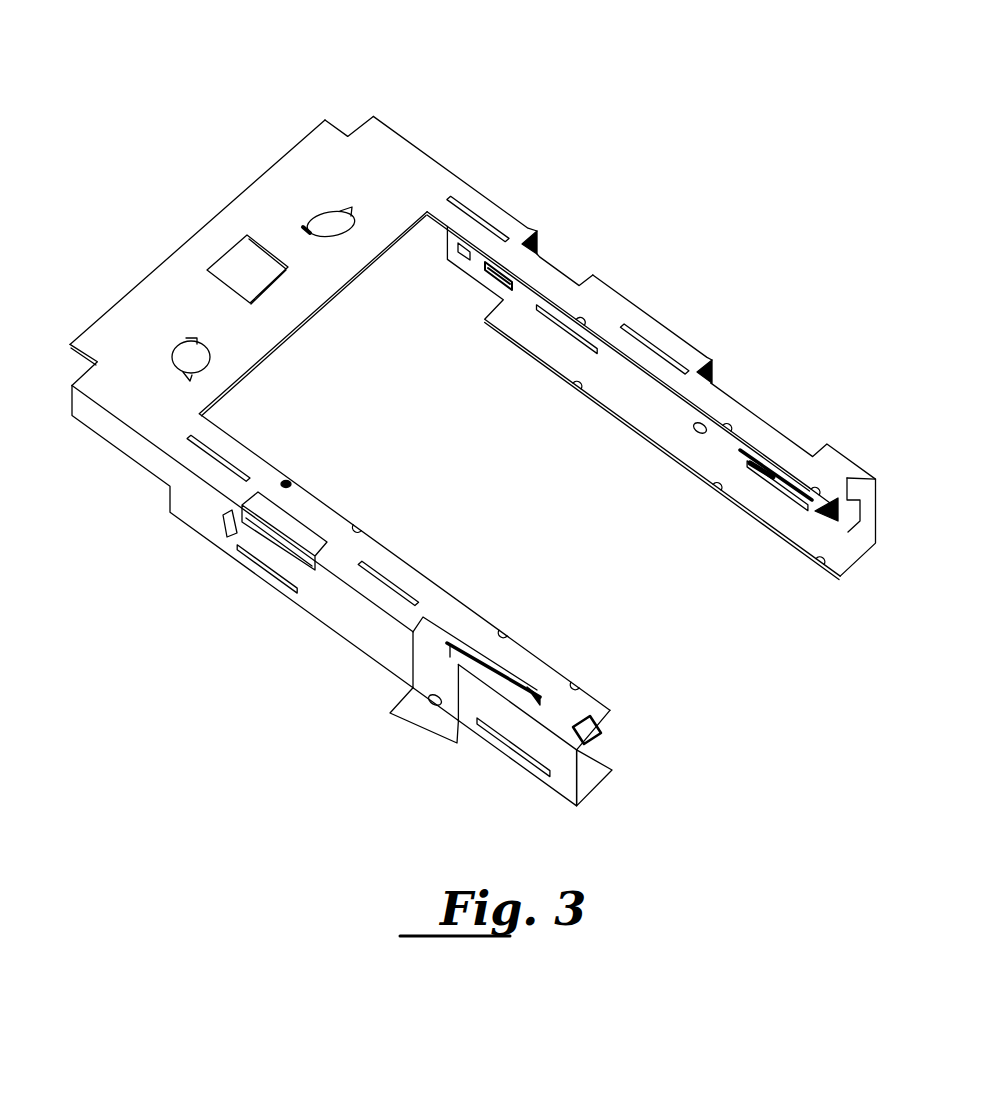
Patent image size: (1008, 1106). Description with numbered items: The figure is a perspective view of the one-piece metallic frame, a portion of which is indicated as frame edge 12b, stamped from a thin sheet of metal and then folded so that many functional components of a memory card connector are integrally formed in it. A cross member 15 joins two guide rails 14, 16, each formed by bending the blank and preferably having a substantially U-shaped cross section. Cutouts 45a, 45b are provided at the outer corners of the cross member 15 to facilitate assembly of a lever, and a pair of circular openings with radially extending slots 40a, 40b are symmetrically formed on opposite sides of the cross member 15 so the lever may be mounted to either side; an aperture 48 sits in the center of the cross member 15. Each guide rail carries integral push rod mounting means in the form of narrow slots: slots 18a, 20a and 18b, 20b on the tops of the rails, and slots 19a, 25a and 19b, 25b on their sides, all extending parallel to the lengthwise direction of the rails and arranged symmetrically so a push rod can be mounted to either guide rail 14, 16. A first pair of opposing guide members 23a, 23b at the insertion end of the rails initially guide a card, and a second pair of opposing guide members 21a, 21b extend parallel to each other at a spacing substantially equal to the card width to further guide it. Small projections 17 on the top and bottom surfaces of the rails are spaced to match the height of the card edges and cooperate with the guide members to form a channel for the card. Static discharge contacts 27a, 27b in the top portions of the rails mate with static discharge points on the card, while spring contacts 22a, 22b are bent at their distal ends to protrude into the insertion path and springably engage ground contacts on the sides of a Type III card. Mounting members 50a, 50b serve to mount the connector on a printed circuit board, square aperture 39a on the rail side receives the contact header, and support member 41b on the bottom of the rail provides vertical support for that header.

The cross member 15 is at (273, 325).
The one-piece metallic frame edge 12b is at (393, 127).
The cutout 45b is at (352, 125).
The cutout 45a is at (72, 367).
The aperture 48 is at (232, 247).
The circular opening with radially extending slot 40b is at (330, 207).
The circular opening with radially extending slot 40a is at (178, 349).
The slot 18b is at (473, 215).
The slot 20b is at (643, 337).
The guide member 21b is at (558, 270).
The support member 41b is at (457, 263).
The static discharge contact 27b is at (492, 275).
The slot 19b is at (535, 307).
The slot 18a is at (200, 450).
The slot 20a is at (373, 577).
The slot 19a is at (267, 570).
The square aperture 39a is at (220, 517).
The static discharge contact 27a is at (303, 493).
The guide member 21a is at (303, 533).
The projection 17 is at (577, 385).
The mounting member 50b is at (690, 430).
The mounting member 50a is at (425, 717).
The spring contact 22b is at (755, 477).
The spring contact 22a is at (490, 667).
The slot 25b is at (793, 497).
The slot 25a is at (525, 752).
The guide rail 16 is at (870, 552).
The guide member 23b is at (850, 532).
The guide rail 14 is at (603, 790).
The guide member 23a is at (603, 742).